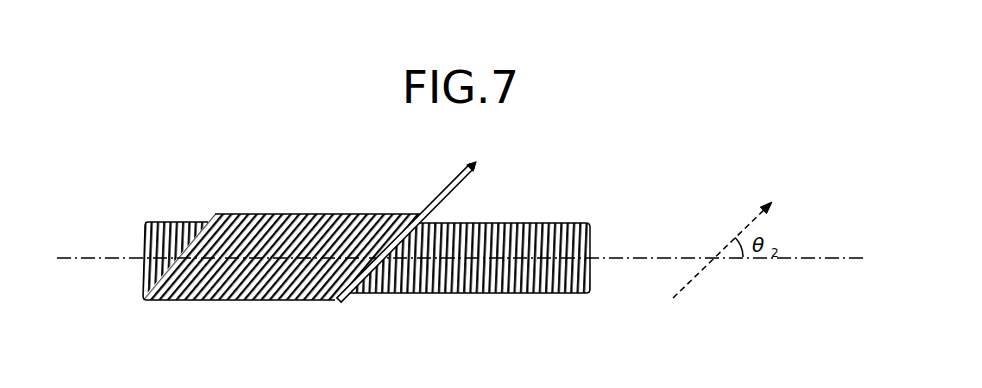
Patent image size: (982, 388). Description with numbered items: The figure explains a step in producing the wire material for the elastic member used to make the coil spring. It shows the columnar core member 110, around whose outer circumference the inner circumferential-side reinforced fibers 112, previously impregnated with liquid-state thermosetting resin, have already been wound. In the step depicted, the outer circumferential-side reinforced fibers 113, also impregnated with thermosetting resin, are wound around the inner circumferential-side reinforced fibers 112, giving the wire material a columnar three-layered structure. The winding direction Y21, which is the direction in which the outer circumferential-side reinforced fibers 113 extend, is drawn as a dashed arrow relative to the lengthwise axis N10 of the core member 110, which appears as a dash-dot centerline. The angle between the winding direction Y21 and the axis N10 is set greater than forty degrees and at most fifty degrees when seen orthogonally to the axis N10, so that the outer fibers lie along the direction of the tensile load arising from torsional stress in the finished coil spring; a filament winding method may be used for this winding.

The core member 110 is at (403, 252).
The inner circumferential-side reinforced fibers 112 is at (403, 293).
The outer circumferential-side reinforced fibers 113 is at (437, 191).
The axis N10 is at (836, 256).
The winding direction Y21 is at (695, 277).